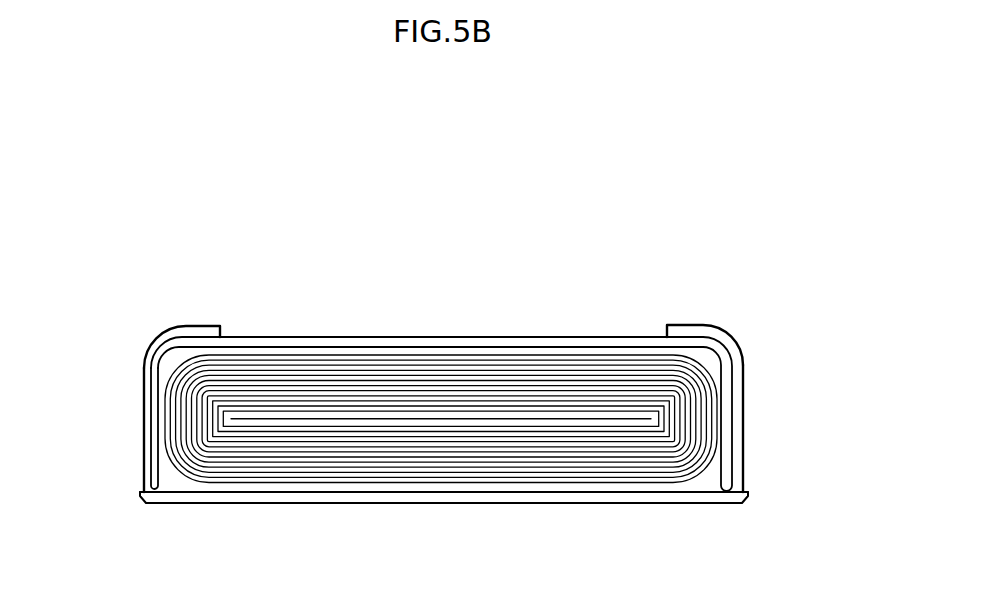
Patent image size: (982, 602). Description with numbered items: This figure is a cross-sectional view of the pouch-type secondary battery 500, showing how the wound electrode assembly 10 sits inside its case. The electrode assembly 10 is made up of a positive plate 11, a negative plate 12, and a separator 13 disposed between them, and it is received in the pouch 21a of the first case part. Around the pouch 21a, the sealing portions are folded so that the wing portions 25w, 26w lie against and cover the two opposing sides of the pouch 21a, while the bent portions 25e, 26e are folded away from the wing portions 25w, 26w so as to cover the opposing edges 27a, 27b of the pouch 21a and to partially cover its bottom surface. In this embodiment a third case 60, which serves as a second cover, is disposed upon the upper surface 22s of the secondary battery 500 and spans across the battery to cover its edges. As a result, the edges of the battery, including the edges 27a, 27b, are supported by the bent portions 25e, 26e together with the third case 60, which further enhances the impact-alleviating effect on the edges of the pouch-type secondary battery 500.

The pouch-type secondary battery 500 is at (95, 110).
The electrode assembly 10 is at (402, 263).
The positive plate 11 is at (292, 348).
The negative plate 12 is at (396, 354).
The separator 13 is at (330, 351).
The pouch 21a is at (174, 497).
The upper surface 22s is at (472, 494).
The bent portion 25e is at (695, 324).
The wing portion 25w is at (745, 413).
The bent portion 26e is at (190, 325).
The wing portion 26w is at (143, 413).
The edge 27a is at (170, 349).
The edge 27b is at (727, 346).
The third case 60 is at (333, 503).